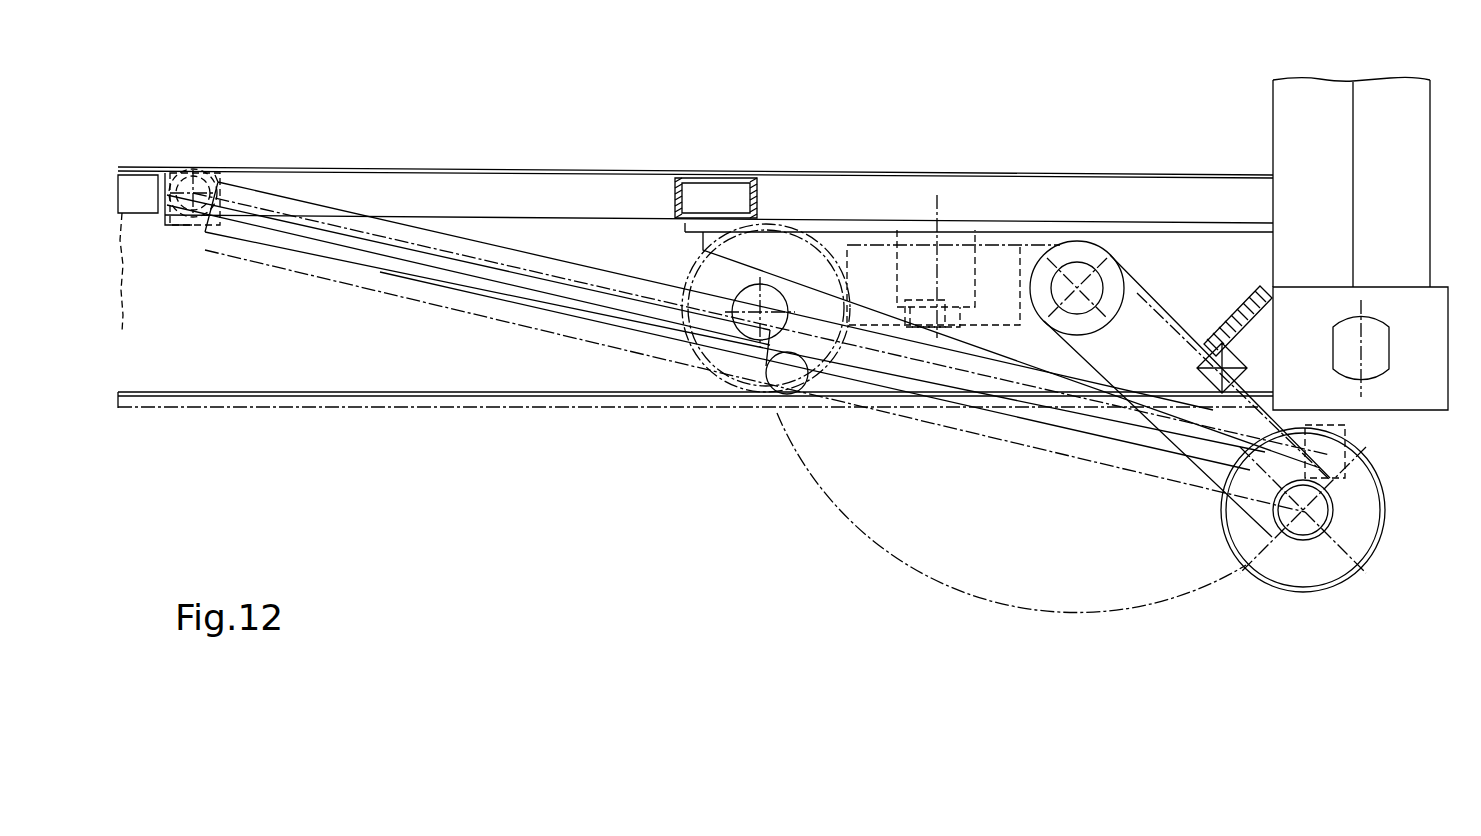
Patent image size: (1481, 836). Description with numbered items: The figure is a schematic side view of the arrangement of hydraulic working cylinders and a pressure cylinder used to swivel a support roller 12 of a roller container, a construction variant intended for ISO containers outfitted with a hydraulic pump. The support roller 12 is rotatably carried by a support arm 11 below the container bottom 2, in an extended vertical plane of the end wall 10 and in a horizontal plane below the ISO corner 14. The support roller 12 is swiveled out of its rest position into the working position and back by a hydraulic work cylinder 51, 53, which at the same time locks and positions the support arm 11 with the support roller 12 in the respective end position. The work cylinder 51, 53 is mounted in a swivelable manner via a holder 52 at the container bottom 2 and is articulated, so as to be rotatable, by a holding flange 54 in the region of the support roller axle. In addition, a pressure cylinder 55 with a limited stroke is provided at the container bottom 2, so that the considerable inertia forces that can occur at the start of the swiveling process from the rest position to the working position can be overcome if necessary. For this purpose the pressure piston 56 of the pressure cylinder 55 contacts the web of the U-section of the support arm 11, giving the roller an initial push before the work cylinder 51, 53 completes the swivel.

The container bottom 2 is at (388, 175).
The end wall 10 is at (1290, 108).
The support arm 11 is at (750, 252).
The support roller 12 is at (1315, 568).
The ISO corner 14 is at (1392, 395).
The hydraulic work cylinder 51 is at (393, 265).
The holder 52 is at (183, 178).
The hydraulic work cylinder 53 is at (1055, 403).
The holding flange 54 is at (1327, 480).
The pressure cylinder 55 is at (953, 238).
The pressure piston 56 is at (920, 318).